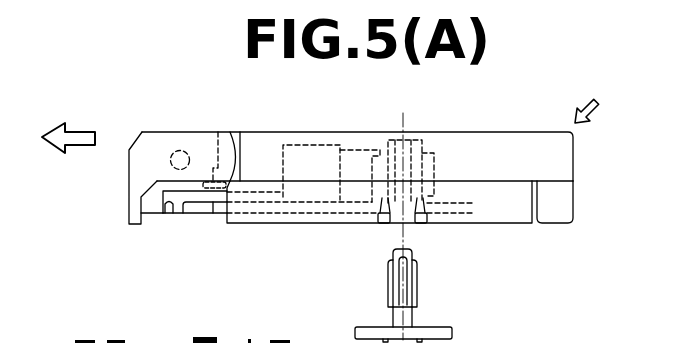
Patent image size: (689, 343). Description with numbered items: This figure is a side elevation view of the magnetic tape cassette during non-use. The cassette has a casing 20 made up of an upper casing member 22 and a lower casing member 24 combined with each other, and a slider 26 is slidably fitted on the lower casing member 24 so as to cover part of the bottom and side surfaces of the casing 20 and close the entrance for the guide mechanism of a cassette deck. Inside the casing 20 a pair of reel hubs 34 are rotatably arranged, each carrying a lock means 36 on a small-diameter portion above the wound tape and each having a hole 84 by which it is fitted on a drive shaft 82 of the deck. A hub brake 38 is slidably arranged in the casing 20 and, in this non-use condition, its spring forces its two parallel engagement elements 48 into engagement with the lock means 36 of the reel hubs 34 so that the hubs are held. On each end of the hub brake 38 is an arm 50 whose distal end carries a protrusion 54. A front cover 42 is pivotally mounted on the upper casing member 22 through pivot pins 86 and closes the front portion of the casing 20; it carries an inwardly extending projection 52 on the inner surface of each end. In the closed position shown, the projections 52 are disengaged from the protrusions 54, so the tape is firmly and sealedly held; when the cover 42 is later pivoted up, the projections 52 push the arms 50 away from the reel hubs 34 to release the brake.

The casing 20 is at (599, 106).
The upper casing member 22 is at (568, 163).
The lower casing member 24 is at (567, 213).
The slider 26 is at (507, 215).
The reel hub 34 is at (436, 170).
The lock means 36 is at (423, 142).
The hub brake 38 is at (301, 144).
The front cover 42 is at (133, 168).
The engagement element 48 is at (355, 144).
The arm 50 is at (214, 208).
The projection 52 is at (218, 132).
The protrusion 54 is at (167, 214).
The drive shaft 82 is at (415, 310).
The hole of the reel hub 84 is at (420, 223).
The pivot pin 86 is at (182, 150).